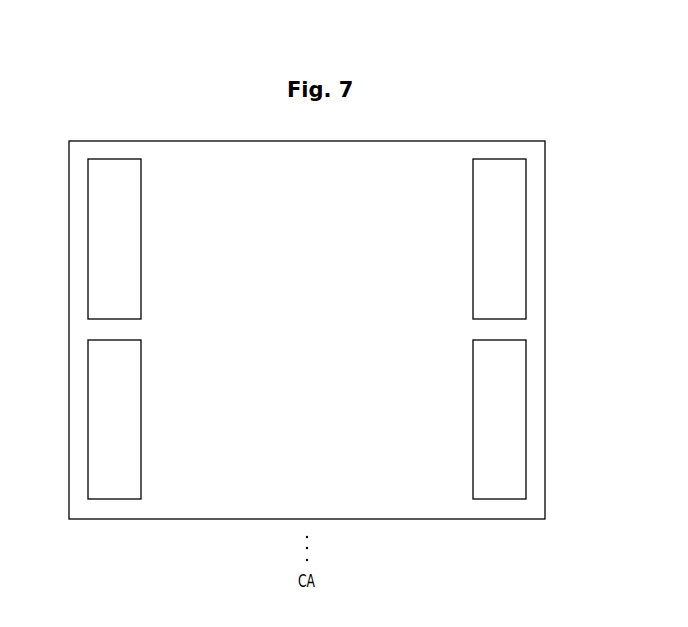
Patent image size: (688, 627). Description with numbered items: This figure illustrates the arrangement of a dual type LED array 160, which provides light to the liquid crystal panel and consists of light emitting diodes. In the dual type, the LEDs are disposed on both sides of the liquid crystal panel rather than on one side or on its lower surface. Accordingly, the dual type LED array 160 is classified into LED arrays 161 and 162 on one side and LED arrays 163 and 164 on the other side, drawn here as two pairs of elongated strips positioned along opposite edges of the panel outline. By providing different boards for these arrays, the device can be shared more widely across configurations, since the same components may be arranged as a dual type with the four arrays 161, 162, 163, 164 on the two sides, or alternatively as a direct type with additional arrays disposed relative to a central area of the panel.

The LED array 160 is at (545, 328).
The LED array 161 is at (88, 238).
The LED array 162 is at (88, 418).
The LED array 163 is at (526, 240).
The LED array 164 is at (526, 418).